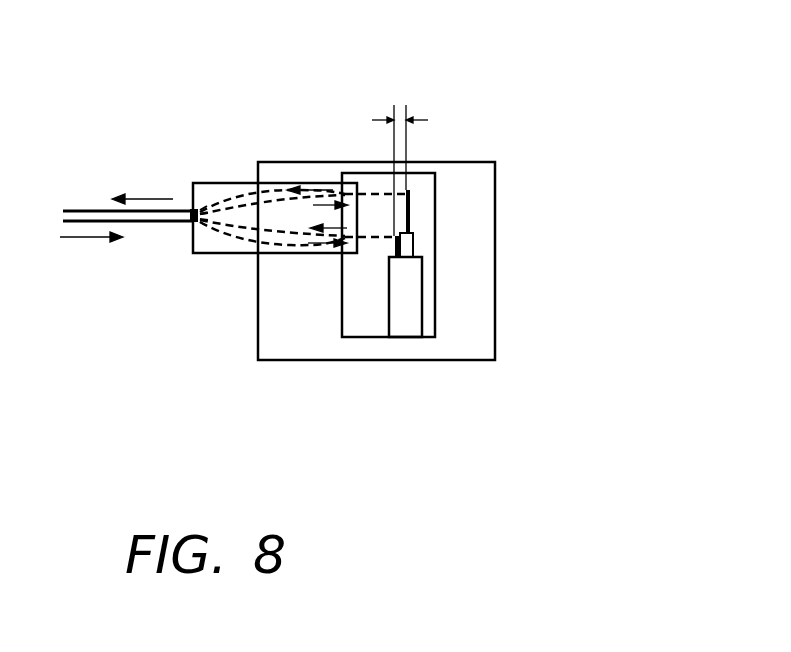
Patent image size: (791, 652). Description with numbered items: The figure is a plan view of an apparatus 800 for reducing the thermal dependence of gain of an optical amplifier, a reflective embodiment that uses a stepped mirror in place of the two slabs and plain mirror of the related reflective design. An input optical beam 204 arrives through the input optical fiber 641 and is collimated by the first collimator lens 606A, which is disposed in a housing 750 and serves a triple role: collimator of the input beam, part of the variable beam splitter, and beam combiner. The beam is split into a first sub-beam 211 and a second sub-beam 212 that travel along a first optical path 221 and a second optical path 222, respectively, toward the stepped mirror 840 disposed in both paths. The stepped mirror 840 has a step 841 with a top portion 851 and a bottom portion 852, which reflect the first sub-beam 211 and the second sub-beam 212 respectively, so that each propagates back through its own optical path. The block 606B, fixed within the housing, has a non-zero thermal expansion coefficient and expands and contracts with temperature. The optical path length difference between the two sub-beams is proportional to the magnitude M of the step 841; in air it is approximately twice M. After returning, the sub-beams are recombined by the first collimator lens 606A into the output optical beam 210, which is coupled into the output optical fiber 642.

The apparatus 800 is at (627, 45).
The housing 750 is at (495, 345).
The first collimator lens 606A is at (220, 183).
The block 606B is at (422, 305).
The output optical fiber 642 is at (87, 211).
The input optical fiber 641 is at (167, 221).
The output optical beam 210 is at (147, 199).
The input optical beam 204 is at (90, 237).
The second optical path 222 is at (278, 193).
The second sub-beam 212 is at (325, 205).
The first optical path 221 is at (285, 235).
The first sub-beam 211 is at (330, 245).
The magnitude of the step M is at (405, 161).
The stepped mirror 840 is at (408, 190).
The bottom portion 852 is at (410, 195).
The step 841 is at (422, 228).
The top portion 851 is at (388, 252).